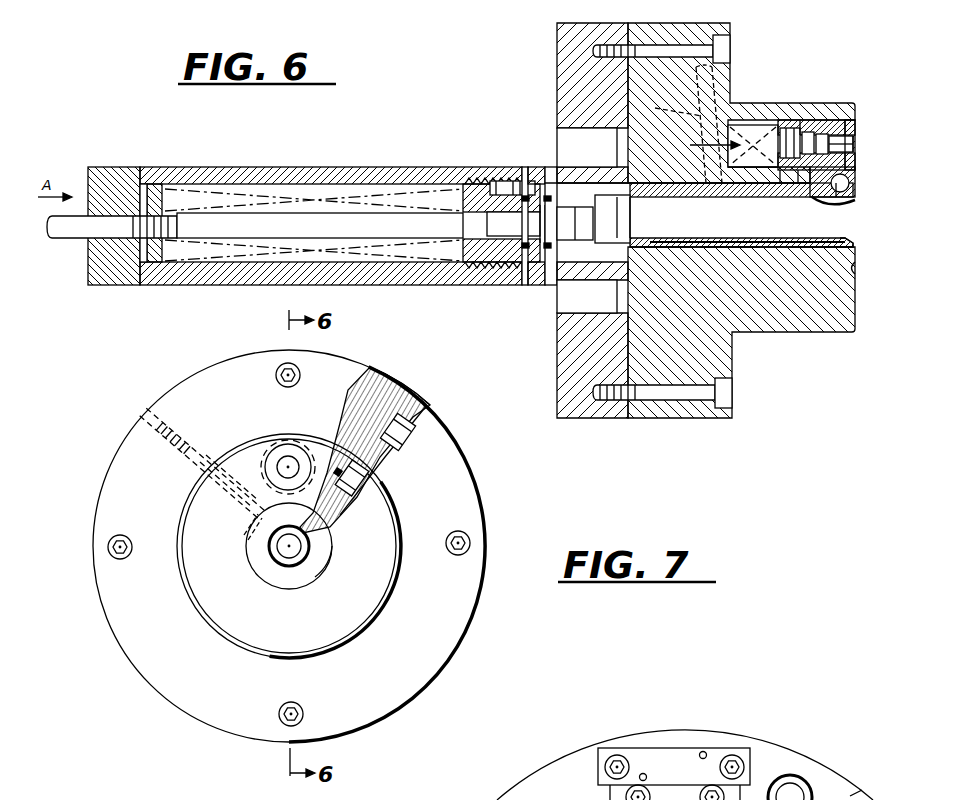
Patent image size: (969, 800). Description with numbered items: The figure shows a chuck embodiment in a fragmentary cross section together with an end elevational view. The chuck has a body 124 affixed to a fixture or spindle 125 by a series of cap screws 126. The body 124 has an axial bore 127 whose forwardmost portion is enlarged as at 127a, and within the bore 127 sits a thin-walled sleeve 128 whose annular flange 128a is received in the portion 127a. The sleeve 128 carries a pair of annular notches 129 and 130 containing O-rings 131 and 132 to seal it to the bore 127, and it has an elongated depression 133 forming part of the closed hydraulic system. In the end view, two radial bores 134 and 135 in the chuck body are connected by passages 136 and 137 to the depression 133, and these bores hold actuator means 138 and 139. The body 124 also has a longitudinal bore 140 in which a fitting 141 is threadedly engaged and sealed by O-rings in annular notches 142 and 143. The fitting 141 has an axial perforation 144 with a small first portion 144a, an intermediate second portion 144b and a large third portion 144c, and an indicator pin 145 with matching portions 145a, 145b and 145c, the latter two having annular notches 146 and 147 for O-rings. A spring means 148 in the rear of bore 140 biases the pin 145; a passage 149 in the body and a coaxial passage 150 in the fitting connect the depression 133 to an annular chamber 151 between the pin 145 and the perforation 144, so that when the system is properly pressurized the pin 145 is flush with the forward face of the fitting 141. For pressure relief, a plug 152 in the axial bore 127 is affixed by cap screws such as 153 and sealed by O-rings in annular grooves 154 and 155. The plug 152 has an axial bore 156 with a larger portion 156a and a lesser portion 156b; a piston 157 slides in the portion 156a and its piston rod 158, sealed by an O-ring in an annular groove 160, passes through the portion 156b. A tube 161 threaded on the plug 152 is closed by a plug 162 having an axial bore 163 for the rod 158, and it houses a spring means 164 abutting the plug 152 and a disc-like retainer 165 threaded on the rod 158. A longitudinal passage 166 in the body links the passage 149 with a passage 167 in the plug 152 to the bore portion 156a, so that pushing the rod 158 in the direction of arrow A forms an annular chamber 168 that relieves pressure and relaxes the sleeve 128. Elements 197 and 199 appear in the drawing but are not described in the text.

In FIG. 6, the chuck body 124 is at (826, 333).
In FIG. 7, the chuck body 124 is at (343, 637).
In FIG. 6, the fixture or spindle 125 is at (557, 362).
In FIG. 7, the fixture or spindle 125 is at (306, 546).
In FIG. 6, the cap screws 126 is at (730, 48).
In FIG. 7, the cap screws 126 is at (300, 373).
In FIG. 6, the axial bore 127 is at (620, 244).
In FIG. 6, the enlarged diameter portion of bore 127a is at (858, 268).
In FIG. 6, the thin-walled sleeve 128 is at (646, 242).
In FIG. 7, the thin-walled sleeve 128 is at (275, 570).
In FIG. 6, the annular flange 128a is at (858, 243).
In FIG. 7, the annular flange 128a is at (313, 573).
In FIG. 6, the annular notch 129 is at (699, 202).
In FIG. 6, the annular notch 130 is at (858, 205).
In FIG. 6, the O-ring 131 is at (662, 248).
In FIG. 6, the O-ring 132 is at (825, 248).
In FIG. 6, the elongated depression 133 is at (731, 248).
In FIG. 7, the elongated depression 133 is at (327, 549).
In FIG. 6, the radial bore 134 is at (665, 106).
In FIG. 7, the radial bore 134 is at (384, 464).
In FIG. 7, the radial bore 135 is at (214, 466).
In FIG. 7, the passage 136 is at (331, 530).
In FIG. 7, the passage 137 is at (246, 538).
In FIG. 6, the actuator means 138 is at (696, 80).
In FIG. 7, the actuator means 138 is at (430, 405).
In FIG. 7, the actuator means 139 is at (146, 412).
In FIG. 6, the longitudinal bore 140 is at (755, 124).
In FIG. 6, the fitting 141 is at (848, 122).
In FIG. 7, the fitting 141 is at (280, 455).
In FIG. 6, the annular notch 142 is at (858, 175).
In FIG. 6, the annular notch 143 is at (798, 172).
In FIG. 6, the axial perforation 144 is at (858, 162).
In FIG. 6, the first portion of perforation 144a is at (851, 130).
In FIG. 6, the second portion of perforation 144b is at (832, 122).
In FIG. 6, the third portion of perforation 144c is at (792, 122).
In FIG. 6, the indicator pin 145 is at (858, 153).
In FIG. 7, the indicator pin 145 is at (296, 465).
In FIG. 6, the indicator pin portion 145a is at (857, 140).
In FIG. 6, the indicator pin portion 145b is at (800, 135).
In FIG. 6, the indicator pin portion 145c is at (785, 171).
In FIG. 6, the annular notch 146 is at (858, 148).
In FIG. 6, the annular notch 147 is at (753, 159).
In FIG. 6, the spring means 148 is at (699, 145).
In FIG. 6, the passage 149 is at (835, 186).
In FIG. 6, the passage 150 is at (858, 192).
In FIG. 6, the annular chamber 151 is at (820, 130).
In FIG. 6, the plug 152 is at (490, 267).
In FIG. 6, the cap screw 153 is at (510, 181).
In FIG. 6, the annular groove 154 is at (525, 268).
In FIG. 6, the annular groove 155 is at (552, 268).
In FIG. 6, the axial bore of plug 156 is at (463, 205).
In FIG. 6, the larger diameter bore portion 156a is at (613, 219).
In FIG. 6, the lesser diameter bore portion 156b is at (463, 241).
In FIG. 6, the piston 157 is at (577, 239).
In FIG. 6, the piston rod 158 is at (280, 239).
In FIG. 6, the annular groove 160 is at (486, 221).
In FIG. 6, the tube 161 is at (368, 171).
In FIG. 6, the plug 162 is at (96, 265).
In FIG. 6, the axial bore 163 is at (120, 180).
In FIG. 6, the spring means 164 is at (284, 198).
In FIG. 6, the disc-like retainer 165 is at (150, 183).
In FIG. 6, the longitudinal passage 166 is at (617, 165).
In FIG. 6, the passage 167 is at (548, 185).
In FIG. 6, the annular chamber 168 is at (541, 210).
In FIG. 7, the housing 197 is at (497, 798).
In FIG. 7, the fitting 199 is at (864, 792).